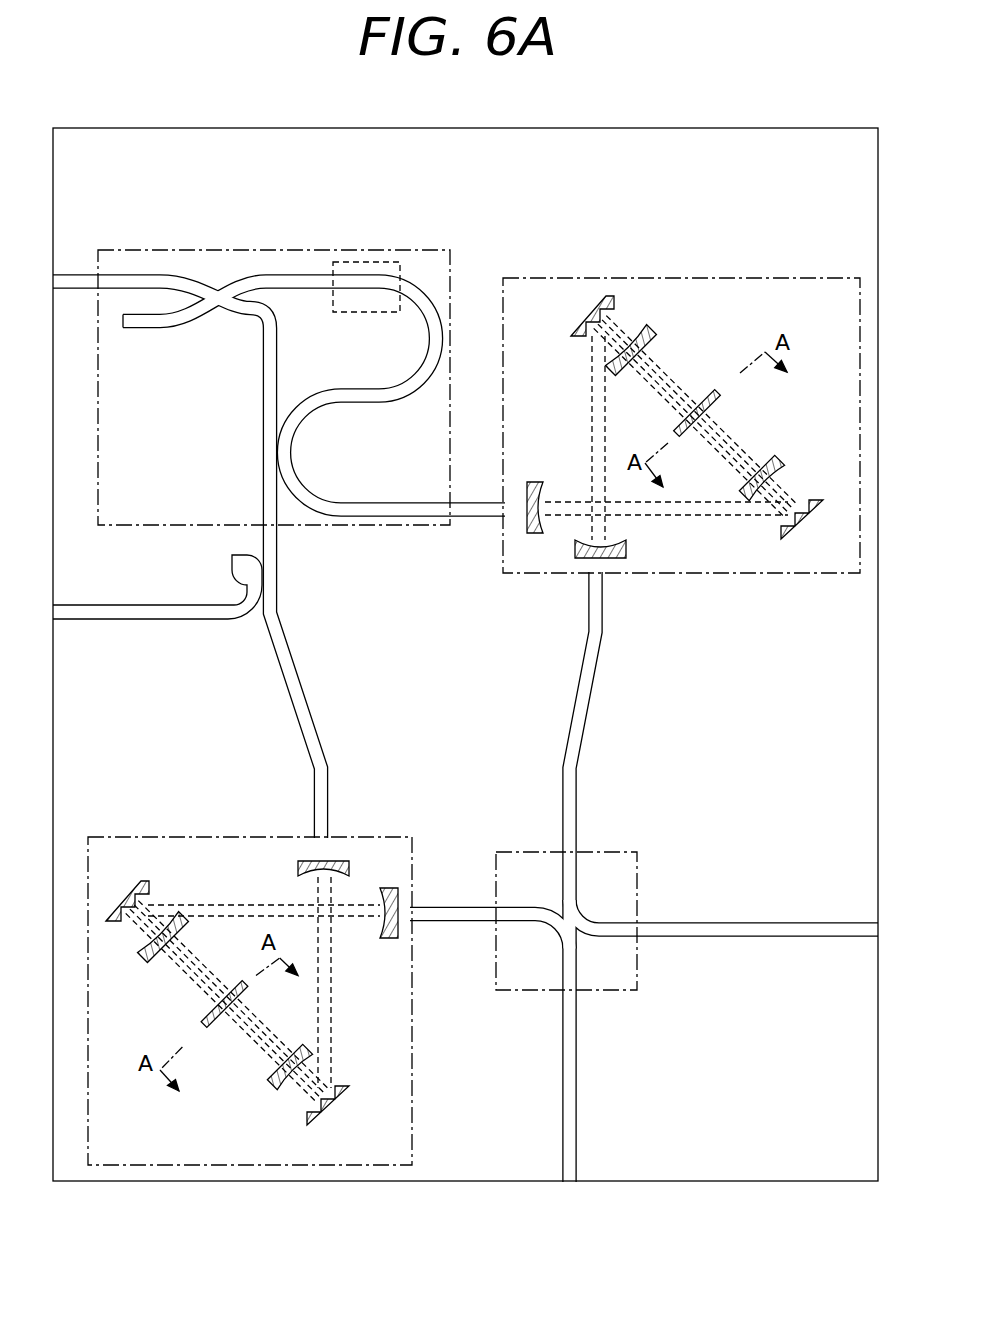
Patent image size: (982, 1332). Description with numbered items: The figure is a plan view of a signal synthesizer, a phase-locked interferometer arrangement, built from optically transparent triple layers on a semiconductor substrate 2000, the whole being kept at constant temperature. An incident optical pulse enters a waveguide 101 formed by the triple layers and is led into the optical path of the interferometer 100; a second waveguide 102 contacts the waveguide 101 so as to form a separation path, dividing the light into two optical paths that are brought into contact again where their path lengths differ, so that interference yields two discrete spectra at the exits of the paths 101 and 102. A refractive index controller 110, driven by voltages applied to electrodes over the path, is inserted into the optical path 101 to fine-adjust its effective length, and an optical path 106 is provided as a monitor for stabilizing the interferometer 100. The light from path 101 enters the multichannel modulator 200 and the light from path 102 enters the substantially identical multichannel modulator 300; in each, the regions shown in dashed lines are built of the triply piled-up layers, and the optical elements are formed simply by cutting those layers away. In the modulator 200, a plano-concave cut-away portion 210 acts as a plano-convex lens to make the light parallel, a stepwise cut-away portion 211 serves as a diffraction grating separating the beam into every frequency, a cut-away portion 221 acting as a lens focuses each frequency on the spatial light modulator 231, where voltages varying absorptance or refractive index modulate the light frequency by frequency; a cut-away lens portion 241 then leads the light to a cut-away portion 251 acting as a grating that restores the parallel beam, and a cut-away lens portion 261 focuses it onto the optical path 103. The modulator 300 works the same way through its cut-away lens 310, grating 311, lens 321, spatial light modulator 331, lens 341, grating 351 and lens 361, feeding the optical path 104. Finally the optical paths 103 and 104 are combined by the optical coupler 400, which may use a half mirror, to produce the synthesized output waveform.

The semiconductor substrate 2000 is at (610, 128).
The interferometer 100 is at (288, 250).
The waveguide 101 is at (78, 273).
The waveguide 102 is at (137, 330).
The optical path 103 is at (589, 690).
The optical path 104 is at (447, 901).
The optical path 106 is at (140, 623).
The refractive index controller 110 is at (388, 260).
The multichannel modulator 200 is at (765, 278).
The cut-away portion 210 is at (537, 482).
The cut-away portion 211 is at (813, 523).
The cut-away portion 221 is at (782, 457).
The spatial light modulator 231 is at (705, 390).
The cut-away portion 241 is at (653, 332).
The cut-away portion 251 is at (578, 322).
The cut-away portion 261 is at (628, 548).
The multichannel modulator 300 is at (162, 837).
The cut-away portion 310 is at (298, 868).
The cut-away portion 311 is at (307, 1119).
The cut-away portion 321 is at (267, 1088).
The spatial light modulator 331 is at (203, 1009).
The cut-away portion 341 is at (139, 963).
The cut-away portion 351 is at (131, 883).
The cut-away portion 361 is at (384, 938).
The optical coupler 400 is at (619, 852).